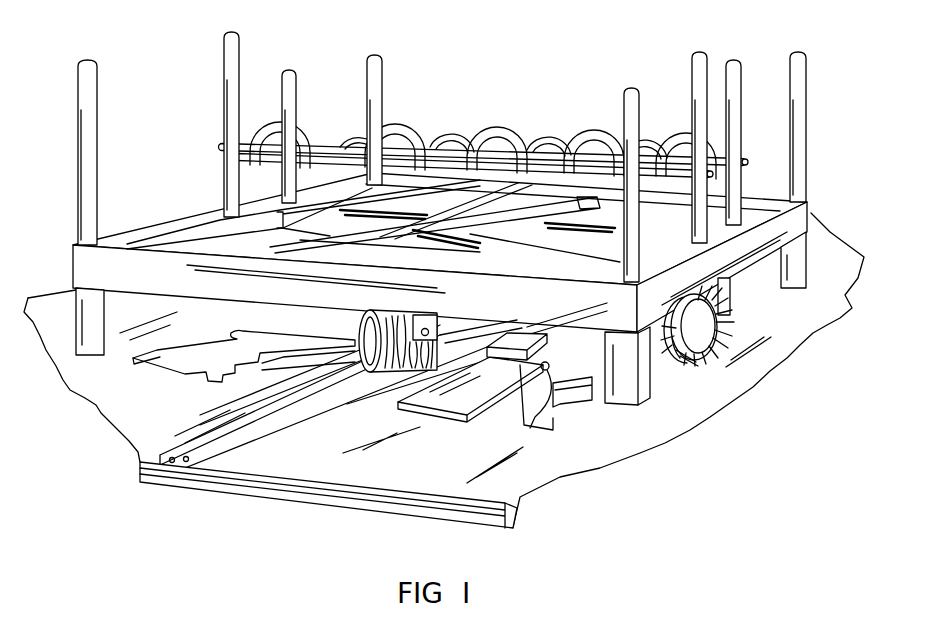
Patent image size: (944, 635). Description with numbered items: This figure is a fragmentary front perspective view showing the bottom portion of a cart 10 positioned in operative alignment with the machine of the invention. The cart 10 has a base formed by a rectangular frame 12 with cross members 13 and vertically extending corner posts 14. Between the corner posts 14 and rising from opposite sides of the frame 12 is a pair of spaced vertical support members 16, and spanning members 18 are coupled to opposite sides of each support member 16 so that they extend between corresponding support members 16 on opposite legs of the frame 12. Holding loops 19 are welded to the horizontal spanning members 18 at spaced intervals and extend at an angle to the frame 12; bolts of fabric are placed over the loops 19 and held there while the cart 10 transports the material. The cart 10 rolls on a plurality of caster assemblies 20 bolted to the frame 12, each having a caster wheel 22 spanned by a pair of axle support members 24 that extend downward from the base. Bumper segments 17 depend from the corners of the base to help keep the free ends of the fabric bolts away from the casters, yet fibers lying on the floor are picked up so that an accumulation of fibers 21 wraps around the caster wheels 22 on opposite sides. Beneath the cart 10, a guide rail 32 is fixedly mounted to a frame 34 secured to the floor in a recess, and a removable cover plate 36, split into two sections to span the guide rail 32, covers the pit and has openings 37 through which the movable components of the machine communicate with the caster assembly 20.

The cart 10 is at (808, 134).
The rectangular frame 12 is at (811, 213).
The cross members 13 is at (508, 240).
The corner posts 14 is at (98, 98).
The support members 16 is at (282, 82).
The bumper segments 17 is at (92, 348).
The spanning members 18 is at (246, 164).
The holding loops 19 is at (457, 128).
The caster assemblies 20 is at (742, 322).
The accumulation of fibers 21 is at (695, 358).
The caster wheel 22 is at (676, 352).
The axle support members 24 is at (732, 281).
The guide rail 32 is at (208, 445).
The frame 34 is at (362, 512).
The cover plate 36 is at (113, 400).
The openings 37 is at (263, 347).